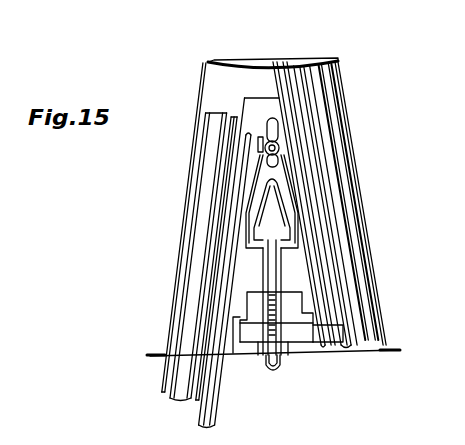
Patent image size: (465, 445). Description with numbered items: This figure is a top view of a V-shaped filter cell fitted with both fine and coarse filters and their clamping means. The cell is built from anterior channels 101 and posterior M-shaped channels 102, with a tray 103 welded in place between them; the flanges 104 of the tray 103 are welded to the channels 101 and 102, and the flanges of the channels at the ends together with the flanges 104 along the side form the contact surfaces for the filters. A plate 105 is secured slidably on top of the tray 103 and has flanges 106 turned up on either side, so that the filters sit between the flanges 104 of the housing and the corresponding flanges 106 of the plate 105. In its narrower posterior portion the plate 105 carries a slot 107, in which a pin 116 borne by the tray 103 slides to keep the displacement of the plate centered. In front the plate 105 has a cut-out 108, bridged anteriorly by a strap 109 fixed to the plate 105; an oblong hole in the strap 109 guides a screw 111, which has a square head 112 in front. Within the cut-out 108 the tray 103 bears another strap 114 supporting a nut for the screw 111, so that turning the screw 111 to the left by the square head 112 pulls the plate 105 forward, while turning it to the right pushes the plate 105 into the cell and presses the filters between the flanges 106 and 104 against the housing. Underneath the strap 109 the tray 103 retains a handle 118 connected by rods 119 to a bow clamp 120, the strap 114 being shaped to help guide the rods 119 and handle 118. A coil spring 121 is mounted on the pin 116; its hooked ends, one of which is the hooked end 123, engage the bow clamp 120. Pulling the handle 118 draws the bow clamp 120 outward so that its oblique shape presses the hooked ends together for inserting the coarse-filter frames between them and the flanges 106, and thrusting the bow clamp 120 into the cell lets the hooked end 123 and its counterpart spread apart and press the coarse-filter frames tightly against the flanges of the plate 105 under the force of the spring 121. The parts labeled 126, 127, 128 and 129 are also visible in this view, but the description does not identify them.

The anterior channels 101 is at (161, 362).
The posterior M-shaped channels 102 is at (297, 63).
The tray 103 is at (237, 73).
The flanges 104 is at (207, 88).
The plate 105 is at (245, 99).
The flanges 106 is at (262, 120).
The slot 107 is at (273, 122).
The cut-out 108 is at (258, 298).
The strap 109 is at (307, 334).
The screw 111 is at (282, 304).
The square head 112 is at (273, 365).
The strap 114 is at (292, 313).
The pin 116 is at (262, 146).
The handle 118 is at (283, 365).
The rods 119 is at (282, 272).
The bow clamp 120 is at (295, 213).
The coil spring 121 is at (259, 152).
The hooked end 123 is at (291, 182).
The side panel 126 is at (213, 190).
The panel face 127 is at (327, 157).
The guide strip 128 is at (210, 420).
The inner panel edge 129 is at (320, 285).